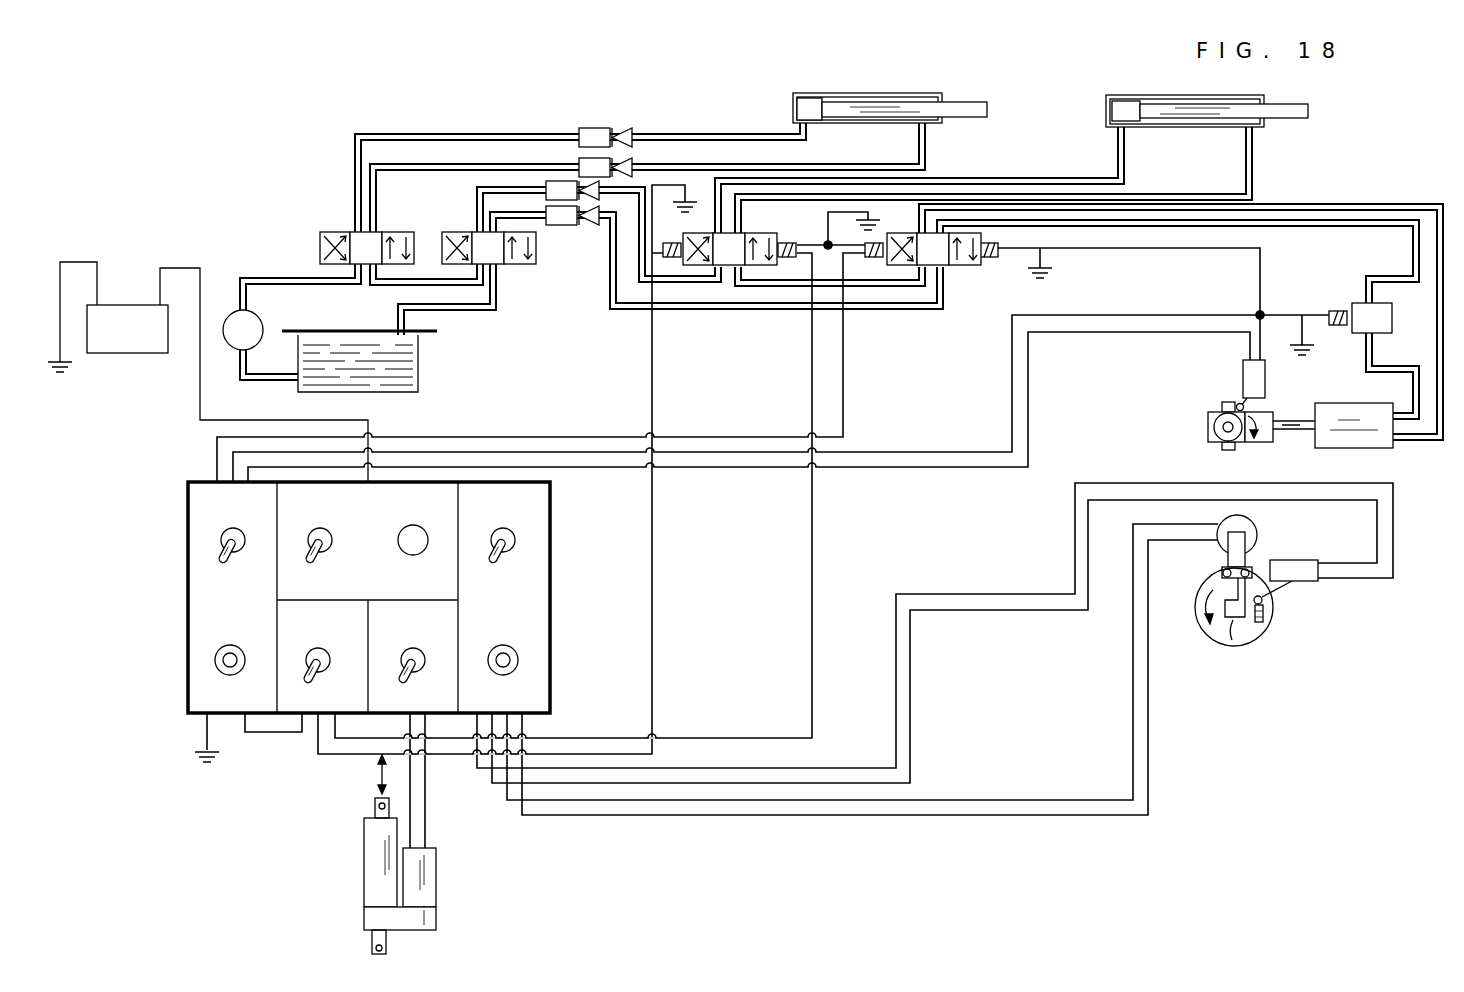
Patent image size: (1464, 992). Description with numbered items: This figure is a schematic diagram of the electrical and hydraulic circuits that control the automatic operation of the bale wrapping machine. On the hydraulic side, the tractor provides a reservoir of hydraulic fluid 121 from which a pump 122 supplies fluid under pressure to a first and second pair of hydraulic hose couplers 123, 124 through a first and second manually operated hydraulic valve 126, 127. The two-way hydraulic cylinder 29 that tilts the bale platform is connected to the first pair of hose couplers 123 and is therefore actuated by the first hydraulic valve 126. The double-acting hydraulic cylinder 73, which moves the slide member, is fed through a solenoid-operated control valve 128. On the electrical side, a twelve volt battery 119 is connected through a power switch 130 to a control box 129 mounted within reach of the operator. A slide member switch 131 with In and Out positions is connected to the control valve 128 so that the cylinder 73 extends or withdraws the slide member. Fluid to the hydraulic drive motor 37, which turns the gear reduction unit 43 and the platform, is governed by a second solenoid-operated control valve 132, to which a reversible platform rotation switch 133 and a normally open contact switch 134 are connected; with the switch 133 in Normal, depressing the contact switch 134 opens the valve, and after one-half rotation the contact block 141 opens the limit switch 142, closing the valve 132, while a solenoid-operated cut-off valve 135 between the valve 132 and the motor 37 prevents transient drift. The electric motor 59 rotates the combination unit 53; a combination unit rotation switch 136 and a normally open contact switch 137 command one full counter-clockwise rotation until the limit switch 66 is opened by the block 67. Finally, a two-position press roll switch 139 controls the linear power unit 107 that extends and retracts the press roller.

The two-way hydraulic cylinder 29 is at (838, 94).
The double-acting hydraulic cylinder 73 is at (1122, 96).
The first pair of hydraulic hose couplers 123 is at (591, 148).
The second pair of hydraulic hose couplers 124 is at (562, 203).
The first manually operated hydraulic valve 126 is at (326, 232).
The second manually operated hydraulic valve 127 is at (535, 264).
The solenoid-operated control valve 128 is at (725, 262).
The second solenoid-operated control valve 132 is at (960, 267).
The solenoid-operated cut-off valve 135 is at (1363, 308).
The limit switch 142 is at (1243, 376).
The contact block 141 is at (1218, 447).
The gear reduction unit 43 is at (1265, 432).
The hydraulic drive motor 37 is at (1370, 446).
The pump 122 is at (263, 325).
The reservoir of hydraulic fluid 121 is at (410, 372).
The 12 volt battery 119 is at (125, 355).
The control box 129 is at (188, 608).
The reversible platform rotation switch 133 is at (220, 540).
The power switch 130 is at (325, 530).
The combination unit rotation switch 136 is at (514, 543).
The normally open contact switch 134 is at (215, 663).
The slide member switch 131 is at (320, 650).
The two-position press roll switch 139 is at (410, 650).
The normally open contact switch 137 is at (516, 663).
The electric motor 59 is at (1245, 533).
The combination unit 53 is at (1240, 628).
The limit switch 66 is at (1308, 581).
The block 67 is at (1263, 623).
The linear power unit 107 is at (437, 914).